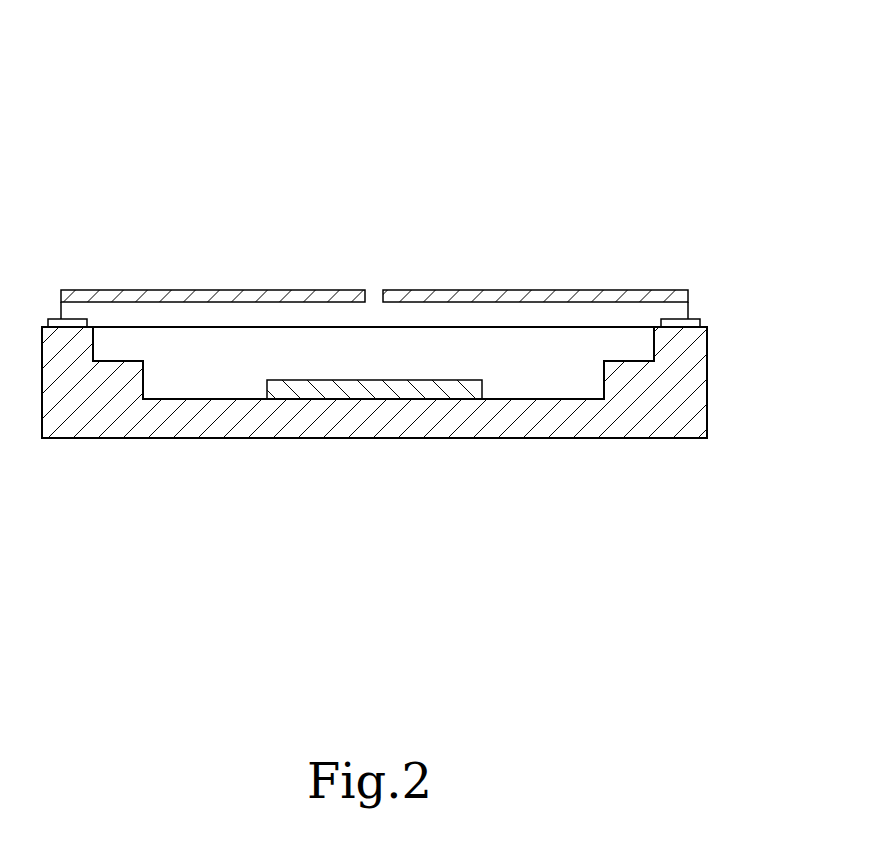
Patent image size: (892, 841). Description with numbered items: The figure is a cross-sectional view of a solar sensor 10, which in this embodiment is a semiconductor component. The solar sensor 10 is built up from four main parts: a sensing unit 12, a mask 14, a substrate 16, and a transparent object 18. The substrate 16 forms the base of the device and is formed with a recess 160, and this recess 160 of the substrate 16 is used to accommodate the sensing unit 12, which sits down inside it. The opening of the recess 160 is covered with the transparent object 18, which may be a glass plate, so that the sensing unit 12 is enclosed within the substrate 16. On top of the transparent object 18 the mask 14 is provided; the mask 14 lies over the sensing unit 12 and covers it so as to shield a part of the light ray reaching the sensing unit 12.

The solar sensor 10 is at (165, 112).
The sensing unit 12 is at (332, 388).
The mask 14 is at (533, 290).
The substrate 16 is at (493, 438).
The recess 160 is at (570, 350).
The transparent object 18 is at (85, 318).